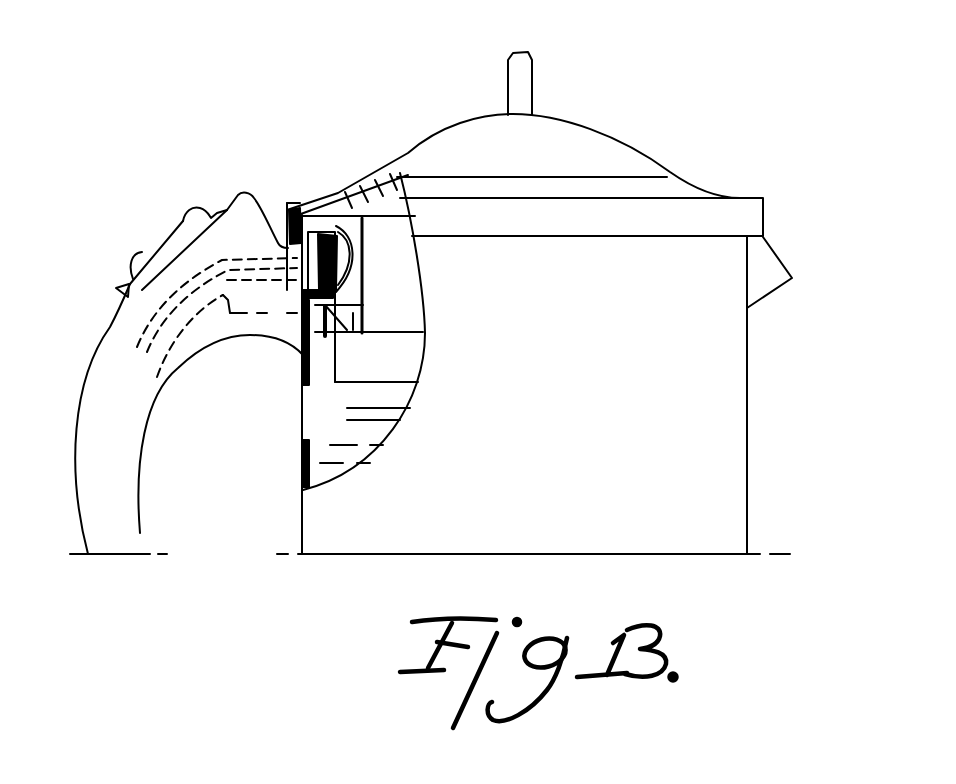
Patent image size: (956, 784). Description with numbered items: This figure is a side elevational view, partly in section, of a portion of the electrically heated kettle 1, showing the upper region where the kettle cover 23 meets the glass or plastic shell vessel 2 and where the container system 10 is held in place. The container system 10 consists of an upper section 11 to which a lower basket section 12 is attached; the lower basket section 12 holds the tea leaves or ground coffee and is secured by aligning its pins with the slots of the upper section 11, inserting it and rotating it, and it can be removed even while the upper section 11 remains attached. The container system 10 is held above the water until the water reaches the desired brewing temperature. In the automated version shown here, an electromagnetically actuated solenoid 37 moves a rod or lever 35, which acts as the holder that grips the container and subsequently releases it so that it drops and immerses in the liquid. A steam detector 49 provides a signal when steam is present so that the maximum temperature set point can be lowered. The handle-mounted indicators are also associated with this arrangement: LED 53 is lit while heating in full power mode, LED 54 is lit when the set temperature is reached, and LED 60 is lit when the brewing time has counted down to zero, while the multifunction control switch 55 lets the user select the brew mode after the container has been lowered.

The electrically heated kettle 1 is at (681, 153).
The shell vessel 2 is at (302, 512).
The container system 10 is at (343, 396).
The upper section 11 is at (388, 247).
The lower basket section 12 is at (365, 390).
The kettle cover 23 is at (483, 138).
The rod or lever 35 is at (350, 257).
The electromagnetically actuated solenoid 37 is at (273, 298).
The steam detector 49 is at (290, 212).
The LED 53 is at (242, 197).
The LED 54 is at (220, 203).
The control switch 55 is at (142, 252).
The LED 60 is at (118, 290).